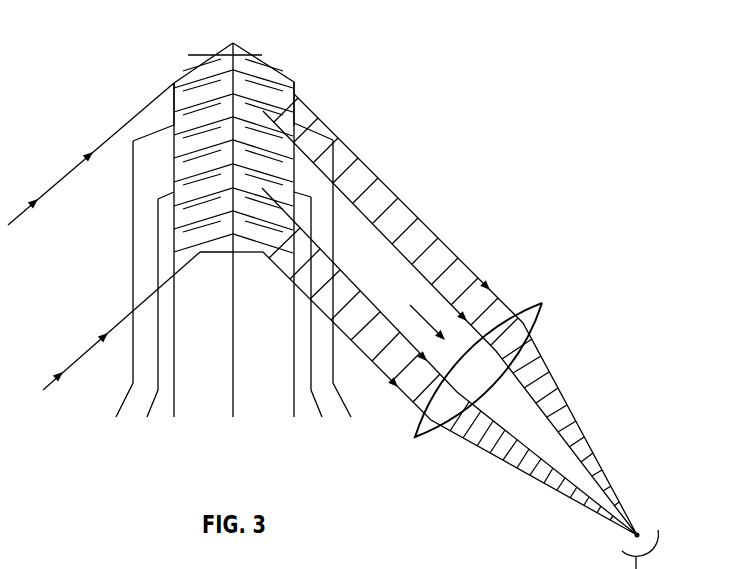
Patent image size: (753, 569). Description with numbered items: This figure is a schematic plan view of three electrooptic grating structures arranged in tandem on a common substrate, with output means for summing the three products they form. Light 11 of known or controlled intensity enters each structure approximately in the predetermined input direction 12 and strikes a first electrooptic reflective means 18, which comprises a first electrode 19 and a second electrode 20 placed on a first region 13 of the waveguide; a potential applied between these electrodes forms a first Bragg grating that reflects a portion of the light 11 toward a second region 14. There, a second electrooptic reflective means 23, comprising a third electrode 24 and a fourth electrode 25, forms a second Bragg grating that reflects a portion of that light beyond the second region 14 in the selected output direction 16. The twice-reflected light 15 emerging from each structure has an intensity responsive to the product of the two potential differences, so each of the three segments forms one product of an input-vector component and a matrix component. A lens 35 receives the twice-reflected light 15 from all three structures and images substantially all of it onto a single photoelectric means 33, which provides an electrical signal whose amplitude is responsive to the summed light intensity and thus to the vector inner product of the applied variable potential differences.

The light 11 is at (68, 308).
The predetermined input direction 12 is at (85, 352).
The first region 13 is at (219, 272).
The second region 14 is at (247, 272).
The twice-reflected light 15 is at (411, 263).
The selected output direction 16 is at (430, 325).
The first electrooptic reflective means 18 is at (92, 225).
The first electrode 19 is at (174, 98).
The second electrode 20 is at (195, 59).
The second electrooptic reflective means 23 is at (384, 75).
The third electrode 24 is at (295, 77).
The fourth electrode 25 is at (274, 63).
The photoelectric means 33 is at (620, 554).
The lens 35 is at (542, 306).